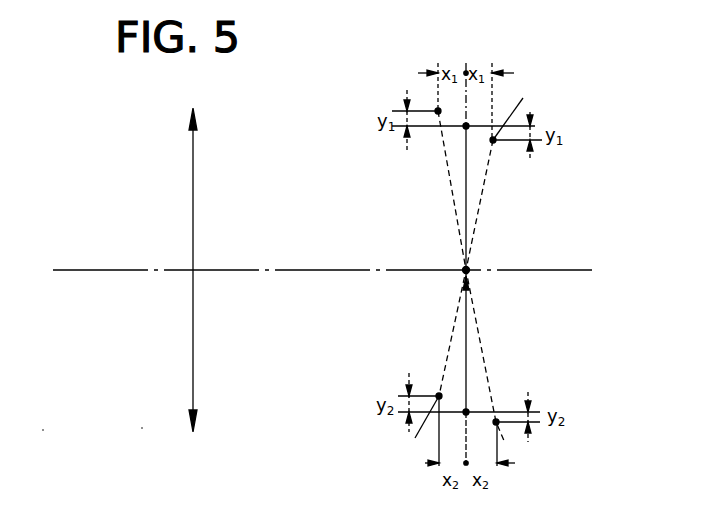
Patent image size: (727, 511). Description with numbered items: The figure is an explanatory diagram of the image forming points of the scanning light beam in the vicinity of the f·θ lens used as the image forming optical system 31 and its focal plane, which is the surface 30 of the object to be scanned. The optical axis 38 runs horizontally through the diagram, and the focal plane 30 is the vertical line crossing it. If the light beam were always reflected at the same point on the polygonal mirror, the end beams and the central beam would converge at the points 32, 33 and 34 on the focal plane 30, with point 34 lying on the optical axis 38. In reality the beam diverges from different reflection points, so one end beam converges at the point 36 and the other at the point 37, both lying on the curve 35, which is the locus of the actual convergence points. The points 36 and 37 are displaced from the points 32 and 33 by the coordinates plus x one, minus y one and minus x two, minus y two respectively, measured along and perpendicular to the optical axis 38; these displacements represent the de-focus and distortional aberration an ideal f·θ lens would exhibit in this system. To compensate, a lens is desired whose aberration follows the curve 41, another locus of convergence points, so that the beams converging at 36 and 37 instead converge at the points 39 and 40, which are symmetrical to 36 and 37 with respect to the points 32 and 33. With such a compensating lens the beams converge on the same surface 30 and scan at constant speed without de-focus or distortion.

The surface of the object to be scanned 30 is at (466, 157).
The image forming optical system 31 is at (193, 177).
The point of convergence 32 is at (466, 126).
The point of convergence 33 is at (466, 412).
The point of convergence 34 is at (466, 270).
The curve 35 is at (473, 212).
The point of convergence 36 is at (493, 140).
The point of convergence 37 is at (439, 396).
The optical axis 38 is at (325, 268).
The point of convergence 39 is at (438, 111).
The point of convergence 40 is at (496, 422).
The curve 41 is at (460, 200).